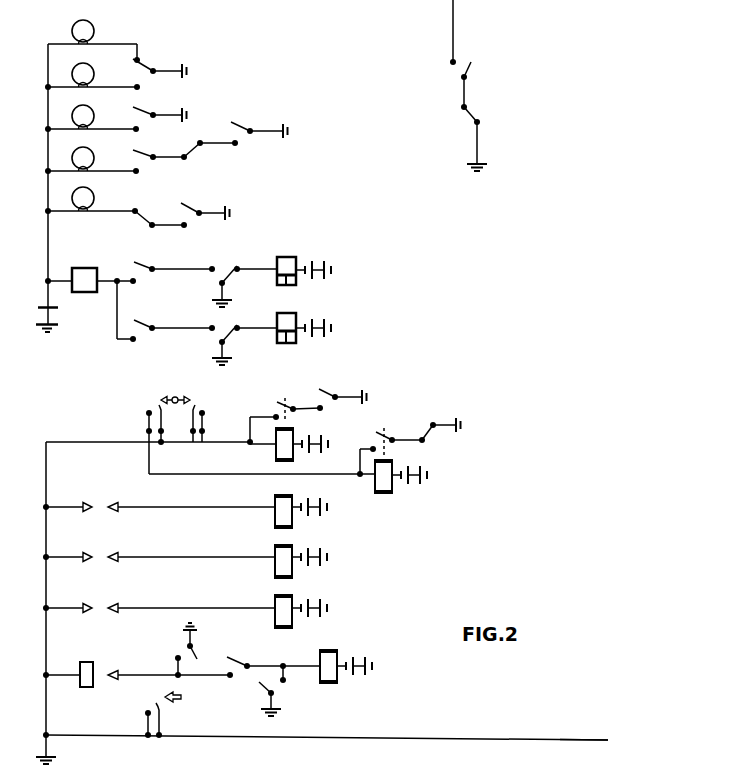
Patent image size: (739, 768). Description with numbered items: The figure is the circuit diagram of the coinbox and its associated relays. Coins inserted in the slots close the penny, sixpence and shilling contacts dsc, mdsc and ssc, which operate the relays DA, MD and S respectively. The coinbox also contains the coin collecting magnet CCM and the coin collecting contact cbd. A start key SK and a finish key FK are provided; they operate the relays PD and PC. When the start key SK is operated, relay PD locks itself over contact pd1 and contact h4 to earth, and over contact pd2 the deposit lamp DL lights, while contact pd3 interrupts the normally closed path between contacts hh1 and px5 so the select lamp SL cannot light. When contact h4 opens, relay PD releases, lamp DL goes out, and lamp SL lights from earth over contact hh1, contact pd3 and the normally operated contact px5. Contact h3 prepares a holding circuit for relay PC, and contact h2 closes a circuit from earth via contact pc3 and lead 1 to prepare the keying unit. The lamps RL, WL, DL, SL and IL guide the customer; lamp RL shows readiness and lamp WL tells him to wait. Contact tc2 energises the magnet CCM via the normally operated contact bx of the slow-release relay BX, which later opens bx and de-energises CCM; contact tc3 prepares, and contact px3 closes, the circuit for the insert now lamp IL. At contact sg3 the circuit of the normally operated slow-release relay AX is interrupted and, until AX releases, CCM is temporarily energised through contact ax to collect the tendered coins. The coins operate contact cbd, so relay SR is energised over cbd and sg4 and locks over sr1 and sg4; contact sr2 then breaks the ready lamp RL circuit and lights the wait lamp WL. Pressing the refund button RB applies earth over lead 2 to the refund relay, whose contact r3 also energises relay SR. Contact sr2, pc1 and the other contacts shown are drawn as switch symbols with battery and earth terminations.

The ready lamp RL is at (92, 32).
The wait lamp WL is at (94, 76).
The deposit lamp DL is at (93, 118).
The select lamp SL is at (93, 160).
The insert now lamp IL is at (93, 200).
The contact sr2 is at (160, 61).
The contact pd2 is at (160, 122).
The contact hh1 is at (251, 132).
The contact pd3 is at (211, 152).
The contact px5 is at (160, 164).
The contact px3 is at (161, 219).
The contact tc3 is at (205, 206).
The coin collecting magnet CCM is at (92, 296).
The contact ax is at (174, 262).
The contact sg3 is at (243, 280).
The relay AX is at (304, 262).
The contact bx is at (174, 320).
The contact tc2 is at (234, 345).
The relay BX is at (304, 337).
The lead 1 is at (458, 32).
The contact h2 is at (474, 86).
The contact pc3 is at (483, 139).
The start key SK is at (161, 436).
The finish key FK is at (203, 419).
The contact pc1 is at (285, 409).
The contact h3 is at (343, 393).
The relay PC is at (289, 450).
The contact pd1 is at (387, 451).
The contact h4 is at (434, 429).
The relay PD is at (401, 485).
The penny coin contact dsc is at (160, 501).
The relay DA is at (286, 511).
The sixpence coin contact mdsc is at (160, 551).
The relay MD is at (286, 561).
The shilling coin contact ssc is at (160, 602).
The relay S is at (292, 611).
The coin collecting contact cbd is at (139, 668).
The contact sr1 is at (179, 649).
The contact sg4 is at (273, 658).
The relay SR is at (346, 662).
The contact r3 is at (276, 691).
The refund button RB is at (174, 714).
The lead 2 is at (584, 733).